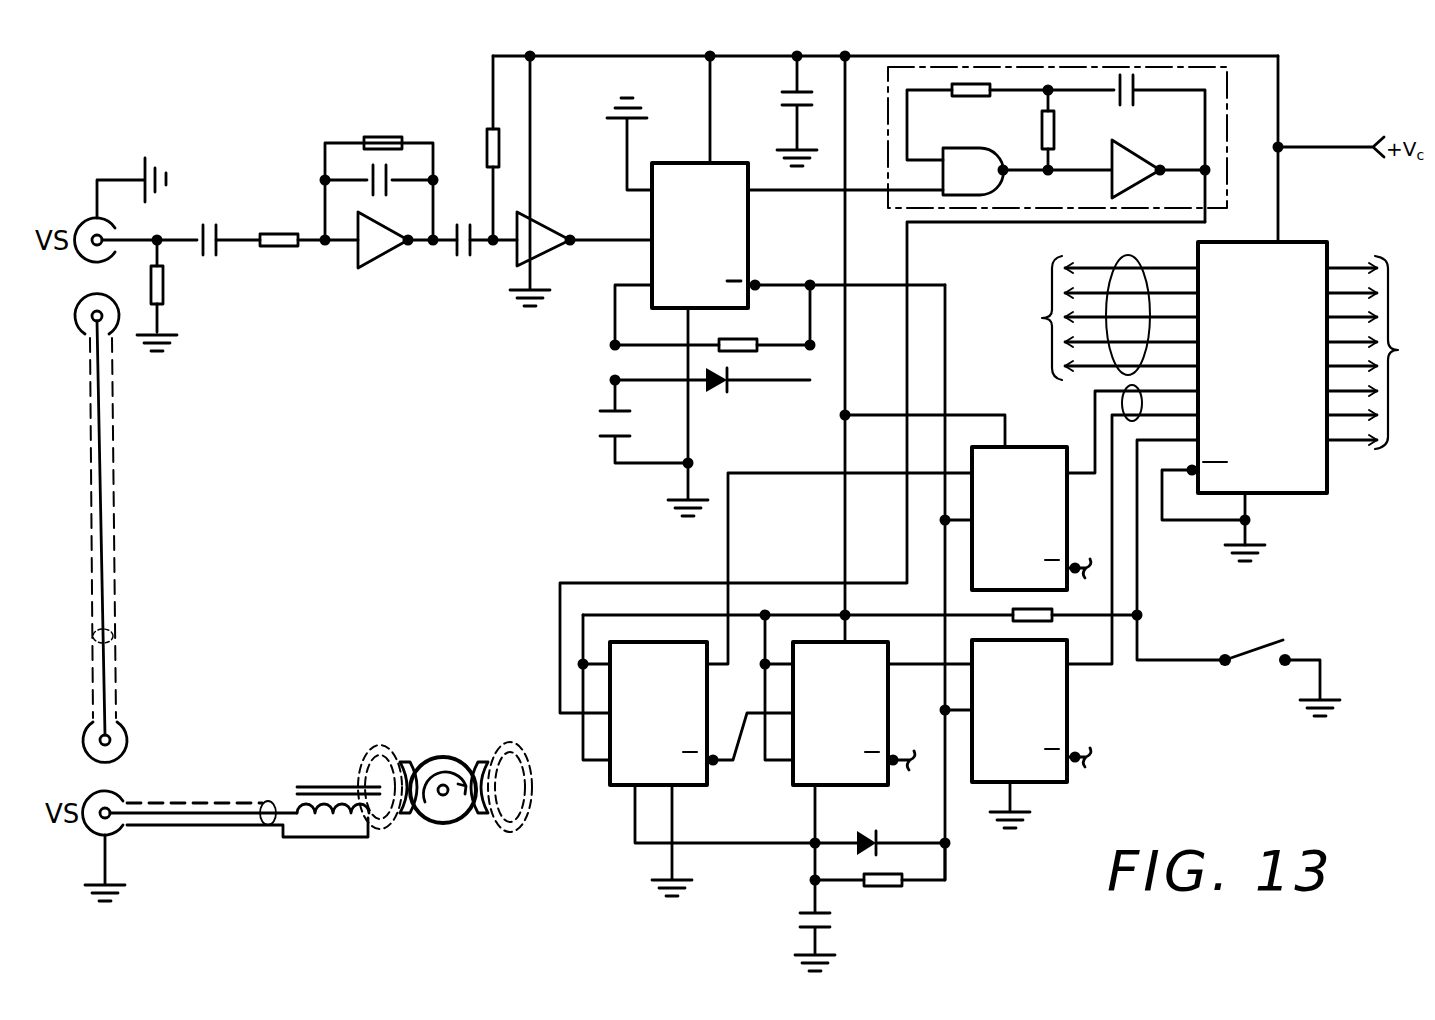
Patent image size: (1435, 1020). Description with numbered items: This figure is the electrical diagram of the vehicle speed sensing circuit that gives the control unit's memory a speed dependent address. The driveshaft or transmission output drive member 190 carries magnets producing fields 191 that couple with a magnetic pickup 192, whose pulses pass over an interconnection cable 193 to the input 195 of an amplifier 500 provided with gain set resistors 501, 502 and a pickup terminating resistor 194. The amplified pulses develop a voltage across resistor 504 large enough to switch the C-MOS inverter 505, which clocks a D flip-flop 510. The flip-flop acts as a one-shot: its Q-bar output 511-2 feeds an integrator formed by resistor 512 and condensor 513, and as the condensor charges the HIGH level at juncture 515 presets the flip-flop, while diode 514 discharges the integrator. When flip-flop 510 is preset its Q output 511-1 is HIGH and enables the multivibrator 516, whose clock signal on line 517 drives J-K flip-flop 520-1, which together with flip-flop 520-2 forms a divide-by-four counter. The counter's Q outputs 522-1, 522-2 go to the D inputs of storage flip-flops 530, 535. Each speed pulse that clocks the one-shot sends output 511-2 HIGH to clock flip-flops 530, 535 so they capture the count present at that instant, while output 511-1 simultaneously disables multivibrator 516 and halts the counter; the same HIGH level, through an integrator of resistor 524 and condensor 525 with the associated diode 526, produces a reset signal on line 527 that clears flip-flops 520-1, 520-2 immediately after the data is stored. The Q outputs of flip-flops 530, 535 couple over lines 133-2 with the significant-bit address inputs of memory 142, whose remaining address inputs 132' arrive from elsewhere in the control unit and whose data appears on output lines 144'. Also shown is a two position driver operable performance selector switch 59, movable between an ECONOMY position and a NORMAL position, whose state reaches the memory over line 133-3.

The performance selector switch 59 is at (1231, 639).
The address input lines 132' is at (1089, 302).
The coupling to memory address inputs 133-2 is at (1130, 386).
The address line 133-3 is at (1140, 598).
The memory 142 is at (1290, 256).
The output lines 144' is at (1379, 336).
The vehicle driveshaft or transmission output drive member 190 is at (473, 750).
The magnets producing fields 191 is at (391, 736).
The magnetic pickup 192 is at (292, 785).
The interconnection cable 193 is at (113, 410).
The pickup terminating resistor 194 is at (166, 292).
The input 195 is at (136, 226).
The amplifier 500 is at (392, 250).
The gain set resistor 501 is at (273, 236).
The gain set resistor 502 is at (385, 142).
The resistor 504 is at (500, 150).
The C-MOS inverter 505 is at (537, 234).
The D flip-flop 510 is at (683, 177).
The Q output 511-1 is at (778, 188).
The Q-bar output 511-2 is at (950, 295).
The resistor 512 is at (752, 345).
The condensor 513 is at (612, 425).
The discharge diode 514 is at (730, 390).
The juncture 515 is at (612, 358).
The multivibrator 516 is at (1226, 115).
The line 517 is at (905, 258).
The J-K flip-flop 520-1 is at (658, 656).
The J-K flip-flop 520-2 is at (826, 664).
The Q output 522-1 is at (730, 556).
The Q output 522-2 is at (923, 660).
The resistor 524 is at (878, 890).
The condensor 525 is at (795, 907).
The diode 526 is at (878, 838).
The reset line 527 is at (740, 828).
The storage flip-flop 530 is at (1040, 463).
The storage flip-flop 535 is at (1052, 696).